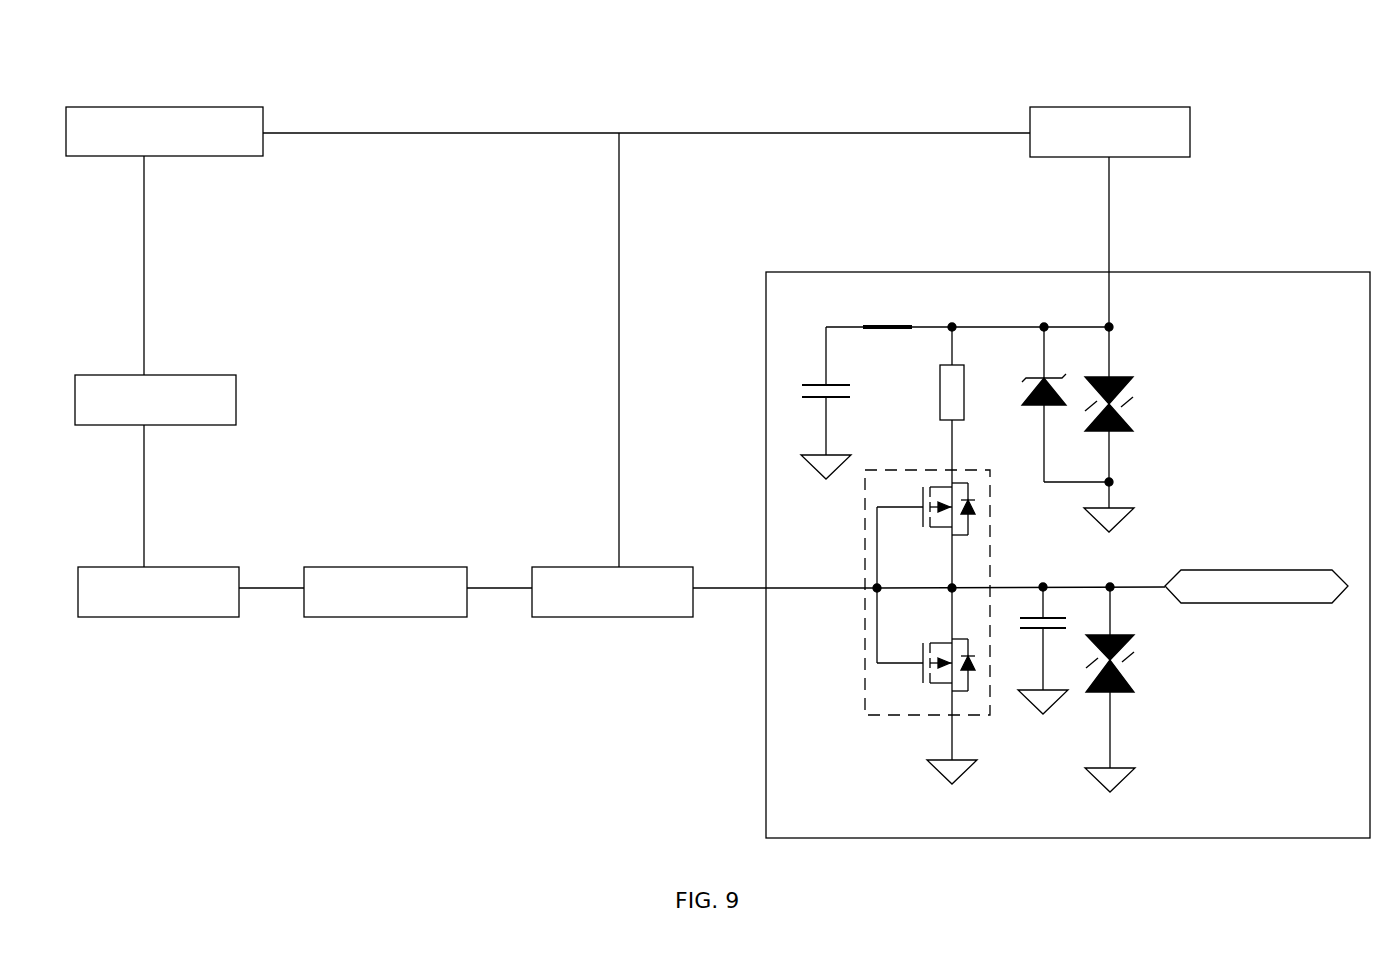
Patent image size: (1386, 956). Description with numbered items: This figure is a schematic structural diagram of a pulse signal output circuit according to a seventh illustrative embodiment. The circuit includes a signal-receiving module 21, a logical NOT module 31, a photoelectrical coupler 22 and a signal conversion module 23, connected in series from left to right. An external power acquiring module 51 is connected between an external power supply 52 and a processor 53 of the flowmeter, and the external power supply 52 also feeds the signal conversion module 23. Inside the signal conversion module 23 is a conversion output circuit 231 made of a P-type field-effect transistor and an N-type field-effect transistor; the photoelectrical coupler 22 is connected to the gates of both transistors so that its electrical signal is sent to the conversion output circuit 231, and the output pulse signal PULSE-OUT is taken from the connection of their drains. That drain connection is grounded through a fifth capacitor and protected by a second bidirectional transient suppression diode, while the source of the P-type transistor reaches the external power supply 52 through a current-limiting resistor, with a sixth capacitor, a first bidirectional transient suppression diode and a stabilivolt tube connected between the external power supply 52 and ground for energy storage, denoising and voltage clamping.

The external power acquiring module 51 is at (165, 107).
The external power supply 52 is at (1110, 107).
The processor 53 is at (155, 375).
The signal-receiving module 21 is at (150, 567).
The logical NOT module 31 is at (383, 567).
The photoelectrical coupler 22 is at (627, 567).
The signal conversion module 23 is at (977, 272).
The conversion output circuit 231 is at (865, 696).